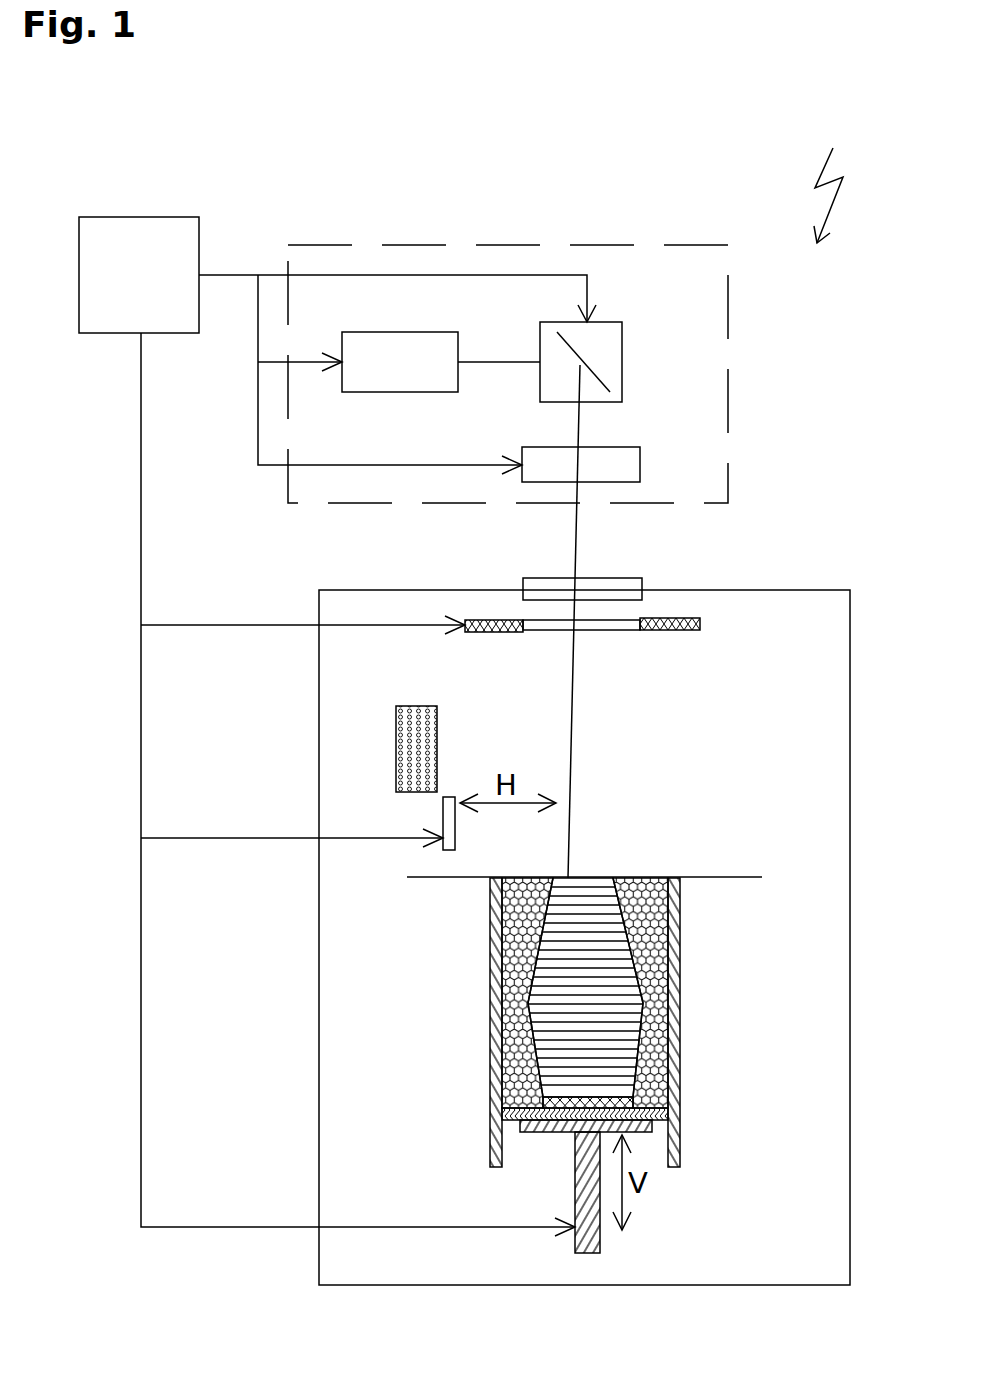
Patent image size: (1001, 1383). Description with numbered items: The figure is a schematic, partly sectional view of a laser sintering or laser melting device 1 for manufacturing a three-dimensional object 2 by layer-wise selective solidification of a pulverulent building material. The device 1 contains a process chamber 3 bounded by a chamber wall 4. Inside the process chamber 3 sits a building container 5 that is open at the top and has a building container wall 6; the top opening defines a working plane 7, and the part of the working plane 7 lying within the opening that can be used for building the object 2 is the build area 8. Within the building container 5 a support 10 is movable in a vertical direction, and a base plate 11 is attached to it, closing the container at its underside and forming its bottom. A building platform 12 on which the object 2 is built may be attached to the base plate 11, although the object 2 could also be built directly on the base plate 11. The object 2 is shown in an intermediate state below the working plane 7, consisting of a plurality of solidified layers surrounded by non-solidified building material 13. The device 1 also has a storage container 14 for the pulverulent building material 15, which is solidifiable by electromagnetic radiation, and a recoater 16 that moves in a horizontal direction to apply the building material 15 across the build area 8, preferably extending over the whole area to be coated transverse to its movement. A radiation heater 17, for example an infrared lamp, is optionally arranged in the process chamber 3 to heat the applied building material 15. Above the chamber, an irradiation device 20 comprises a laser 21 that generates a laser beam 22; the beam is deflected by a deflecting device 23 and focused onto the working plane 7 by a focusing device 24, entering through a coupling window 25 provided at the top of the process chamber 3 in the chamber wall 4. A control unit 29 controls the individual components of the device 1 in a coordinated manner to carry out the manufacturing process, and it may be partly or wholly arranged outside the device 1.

The laser sintering or laser melting device 1 is at (834, 179).
The object 2 is at (603, 932).
The process chamber 3 is at (765, 623).
The chamber wall 4 is at (537, 886).
The building container 5 is at (581, 1022).
The building container wall 6 is at (673, 1020).
The working plane 7 is at (733, 877).
The build area 8 is at (637, 955).
The support 10 is at (563, 1130).
The base plate 11 is at (518, 1128).
The building platform 12 is at (500, 1102).
The non-solidified building material 13 is at (490, 920).
The storage container 14 is at (433, 724).
The pulverulent building material 15 is at (438, 748).
The recoater 16 is at (446, 820).
The radiation heater 17 is at (492, 620).
The irradiation device 20 is at (728, 360).
The laser 21 is at (398, 392).
The laser beam 22 is at (480, 362).
The deflecting device 23 is at (612, 333).
The focusing device 24 is at (610, 458).
The coupling window 25 is at (618, 590).
The control unit 29 is at (337, 726).